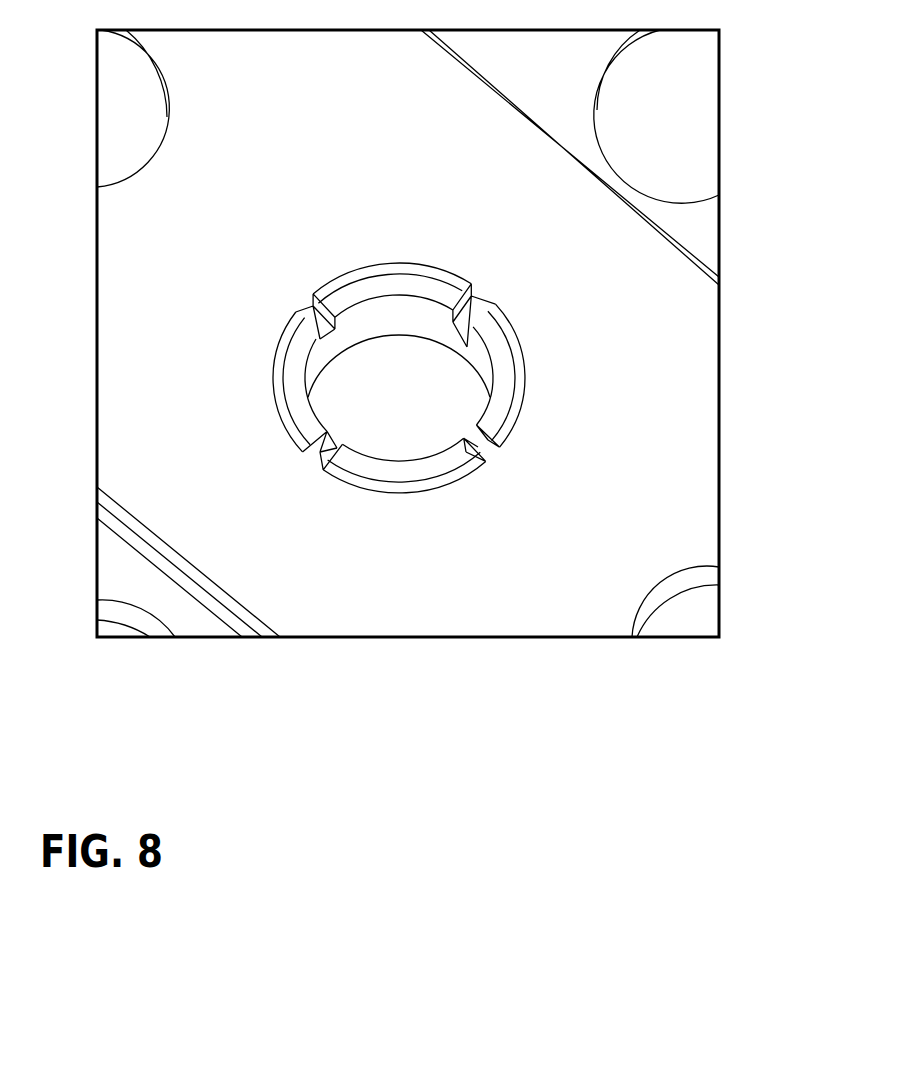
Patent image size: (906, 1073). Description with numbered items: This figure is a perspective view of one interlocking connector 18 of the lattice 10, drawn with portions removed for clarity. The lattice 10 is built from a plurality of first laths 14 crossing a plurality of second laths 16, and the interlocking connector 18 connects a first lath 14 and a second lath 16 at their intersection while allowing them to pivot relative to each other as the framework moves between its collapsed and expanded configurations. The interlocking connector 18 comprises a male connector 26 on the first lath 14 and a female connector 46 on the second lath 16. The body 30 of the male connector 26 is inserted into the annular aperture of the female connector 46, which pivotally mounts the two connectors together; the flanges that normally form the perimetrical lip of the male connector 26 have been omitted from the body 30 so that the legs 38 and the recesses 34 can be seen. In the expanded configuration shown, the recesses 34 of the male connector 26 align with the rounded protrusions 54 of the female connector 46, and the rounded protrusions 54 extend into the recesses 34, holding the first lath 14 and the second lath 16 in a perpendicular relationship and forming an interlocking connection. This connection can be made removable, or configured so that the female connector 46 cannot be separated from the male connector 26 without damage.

The lattice 10 is at (264, 97).
The first lath 14 is at (132, 567).
The second lath 16 is at (657, 345).
The interlocking connector 18 is at (253, 342).
The male connector 26 is at (437, 482).
The body 30 is at (377, 317).
The recess 34 is at (517, 414).
The leg 38 is at (298, 390).
The female connector 46 is at (342, 272).
The rounded protrusion 54 is at (490, 457).